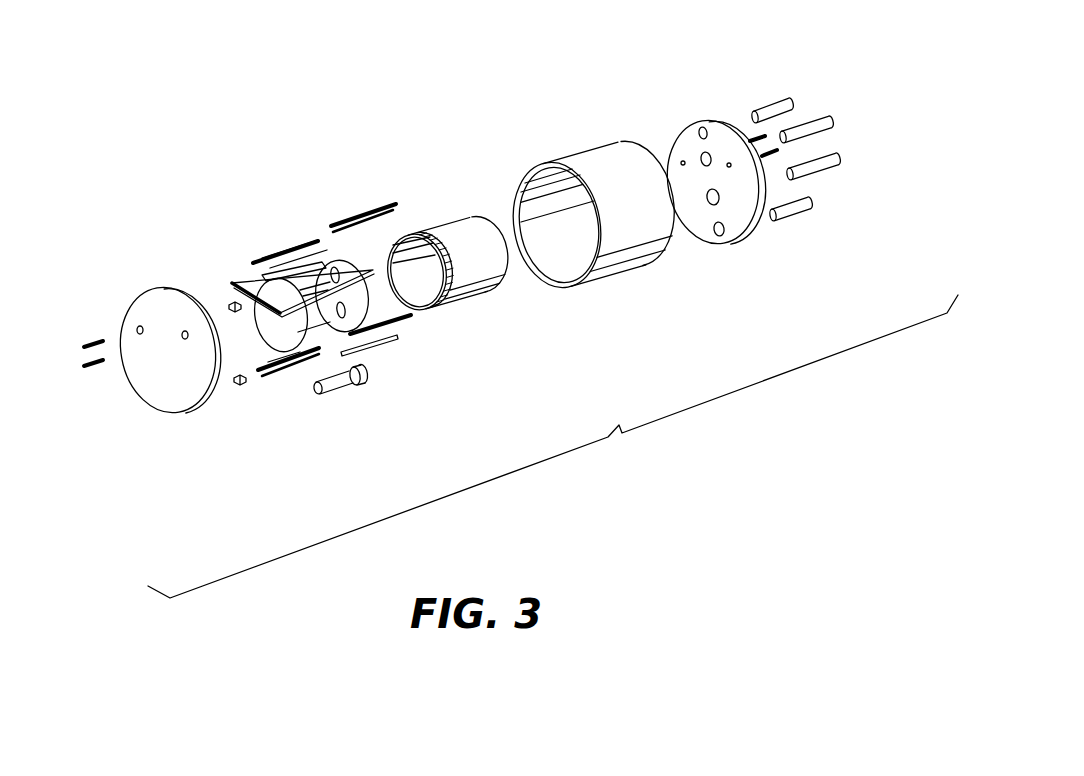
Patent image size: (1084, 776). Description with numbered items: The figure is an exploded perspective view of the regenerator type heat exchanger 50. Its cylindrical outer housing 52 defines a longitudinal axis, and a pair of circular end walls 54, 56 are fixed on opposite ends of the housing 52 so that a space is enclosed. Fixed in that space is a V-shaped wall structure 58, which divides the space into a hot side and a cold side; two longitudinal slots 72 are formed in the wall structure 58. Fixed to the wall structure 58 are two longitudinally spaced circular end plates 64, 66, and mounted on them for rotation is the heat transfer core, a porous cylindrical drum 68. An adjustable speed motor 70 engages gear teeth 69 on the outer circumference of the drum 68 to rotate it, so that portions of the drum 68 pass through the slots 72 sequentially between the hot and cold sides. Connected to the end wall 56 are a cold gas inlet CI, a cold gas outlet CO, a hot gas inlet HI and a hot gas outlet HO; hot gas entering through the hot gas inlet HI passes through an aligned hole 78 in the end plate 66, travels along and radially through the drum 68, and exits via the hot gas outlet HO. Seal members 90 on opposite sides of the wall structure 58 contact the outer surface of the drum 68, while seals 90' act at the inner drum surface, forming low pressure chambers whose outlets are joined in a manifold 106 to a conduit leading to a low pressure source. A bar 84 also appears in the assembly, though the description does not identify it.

The regenerator type heat exchanger 50 is at (553, 446).
The cylindrical outer housing 52 is at (645, 273).
The circular end wall 54 is at (157, 403).
The circular end wall 56 is at (700, 120).
The V-shaped wall structure 58 is at (248, 278).
The circular end plate 64 is at (300, 350).
The circular end plate 66 is at (350, 243).
The cylindrical drum 68 is at (455, 254).
The gear teeth 69 is at (440, 303).
The adjustable speed motor 70 is at (357, 393).
The longitudinal slots 72 is at (268, 270).
The hole 78 is at (350, 317).
The bar 84 is at (340, 247).
The seal members 90 is at (404, 279).
The seals 90' is at (270, 323).
The manifold 106 is at (227, 307).
The cold gas inlet CI is at (797, 103).
The cold gas outlet CO is at (833, 127).
The hot gas inlet HI is at (830, 170).
The hot gas outlet HO is at (807, 210).